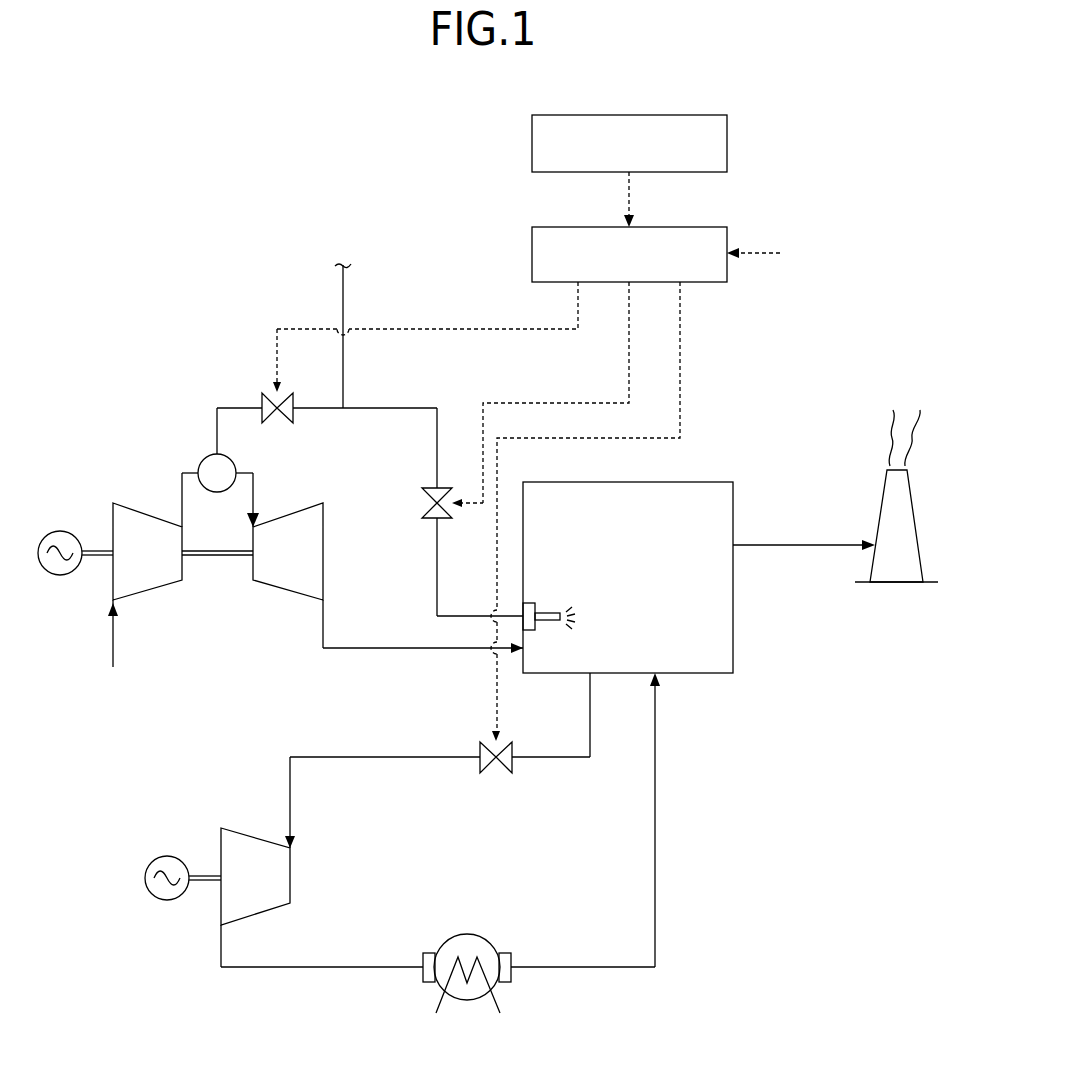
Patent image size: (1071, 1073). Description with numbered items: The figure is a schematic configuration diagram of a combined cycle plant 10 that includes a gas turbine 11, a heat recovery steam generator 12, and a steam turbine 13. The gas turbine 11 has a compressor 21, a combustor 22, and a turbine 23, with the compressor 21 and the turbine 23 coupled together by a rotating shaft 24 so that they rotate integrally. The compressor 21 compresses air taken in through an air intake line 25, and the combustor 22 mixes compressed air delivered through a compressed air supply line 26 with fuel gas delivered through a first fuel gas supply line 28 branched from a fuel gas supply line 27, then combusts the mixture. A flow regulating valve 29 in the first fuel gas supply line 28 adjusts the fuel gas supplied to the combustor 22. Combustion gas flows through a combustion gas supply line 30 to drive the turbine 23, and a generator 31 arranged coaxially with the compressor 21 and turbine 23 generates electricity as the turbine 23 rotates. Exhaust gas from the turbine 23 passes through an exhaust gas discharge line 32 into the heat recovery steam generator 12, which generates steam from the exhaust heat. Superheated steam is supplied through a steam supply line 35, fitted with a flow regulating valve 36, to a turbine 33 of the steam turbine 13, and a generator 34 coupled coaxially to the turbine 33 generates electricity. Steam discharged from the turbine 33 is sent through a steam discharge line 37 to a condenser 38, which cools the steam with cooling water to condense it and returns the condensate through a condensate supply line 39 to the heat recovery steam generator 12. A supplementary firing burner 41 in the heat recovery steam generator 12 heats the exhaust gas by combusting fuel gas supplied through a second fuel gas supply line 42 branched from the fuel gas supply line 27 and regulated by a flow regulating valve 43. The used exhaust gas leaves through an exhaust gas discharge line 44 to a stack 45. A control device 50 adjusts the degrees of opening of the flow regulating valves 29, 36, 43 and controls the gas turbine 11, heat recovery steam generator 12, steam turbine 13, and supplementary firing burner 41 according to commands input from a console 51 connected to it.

The combined cycle plant 10 is at (113, 330).
The gas turbine 11 is at (193, 425).
The heat recovery steam generator 12 is at (707, 470).
The steam turbine 13 is at (216, 798).
The compressor 21 is at (131, 514).
The combustor 22 is at (232, 462).
The turbine 23 is at (310, 549).
The rotating shaft 24 is at (220, 558).
The air intake line 25 is at (110, 648).
The compressed air supply line 26 is at (180, 492).
The fuel gas supply line 27 is at (345, 298).
The first fuel gas supply line 28 is at (246, 406).
The flow regulating valve 29 is at (270, 392).
The combustion gas supply line 30 is at (258, 498).
The generator 31 is at (60, 530).
The exhaust gas discharge line 32 is at (376, 647).
The turbine 33 is at (275, 885).
The generator 34 is at (145, 878).
The steam supply line 35 is at (564, 760).
The flow regulating valve 36 is at (492, 773).
The steam discharge line 37 is at (327, 968).
The condenser 38 is at (468, 934).
The condensate supply line 39 is at (657, 852).
The supplementary firing burner 41 is at (550, 632).
The second fuel gas supply line 42 is at (397, 407).
The flow regulating valve 43 is at (427, 488).
The exhaust gas discharge line 44 is at (795, 548).
The stack 45 is at (894, 568).
The control device 50 is at (657, 227).
The console 51 is at (657, 115).